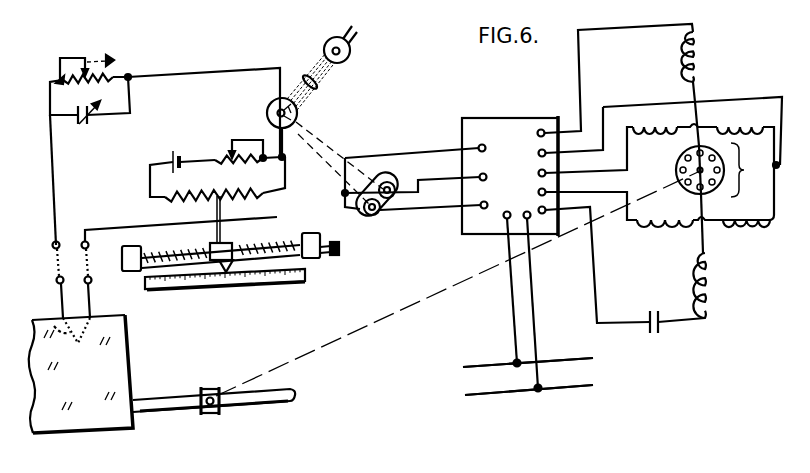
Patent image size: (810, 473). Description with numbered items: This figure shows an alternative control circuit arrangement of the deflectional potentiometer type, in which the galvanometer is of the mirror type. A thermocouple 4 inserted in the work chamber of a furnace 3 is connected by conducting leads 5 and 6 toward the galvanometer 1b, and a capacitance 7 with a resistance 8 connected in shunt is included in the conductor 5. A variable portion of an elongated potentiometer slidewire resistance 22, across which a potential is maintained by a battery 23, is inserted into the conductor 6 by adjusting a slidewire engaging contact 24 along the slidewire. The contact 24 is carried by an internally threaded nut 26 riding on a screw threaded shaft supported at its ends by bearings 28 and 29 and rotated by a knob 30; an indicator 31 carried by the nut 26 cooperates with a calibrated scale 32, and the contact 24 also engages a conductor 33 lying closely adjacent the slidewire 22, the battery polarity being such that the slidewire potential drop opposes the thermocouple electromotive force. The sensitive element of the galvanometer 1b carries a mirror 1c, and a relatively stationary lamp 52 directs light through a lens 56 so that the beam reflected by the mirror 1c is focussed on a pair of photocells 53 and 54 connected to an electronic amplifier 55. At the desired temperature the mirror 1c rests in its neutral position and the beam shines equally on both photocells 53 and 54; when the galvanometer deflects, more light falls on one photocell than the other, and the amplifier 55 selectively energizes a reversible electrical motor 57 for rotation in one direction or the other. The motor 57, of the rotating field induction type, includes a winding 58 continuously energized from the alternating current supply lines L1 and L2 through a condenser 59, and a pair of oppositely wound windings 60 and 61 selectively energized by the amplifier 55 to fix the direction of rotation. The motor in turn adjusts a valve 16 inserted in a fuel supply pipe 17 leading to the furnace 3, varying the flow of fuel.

The galvanometer 1b is at (298, 111).
The mirror 1c is at (278, 103).
The furnace 3 is at (122, 358).
The thermocouple 4 is at (62, 332).
The conducting lead 5 is at (56, 222).
The conducting lead 6 is at (112, 226).
The capacitance 7 is at (89, 125).
The resistance 8 is at (62, 80).
The valve 16 is at (210, 392).
The fuel supply pipe 17 is at (268, 410).
The potentiometer slidewire resistance 22 is at (255, 194).
The battery 23 is at (178, 151).
The slidewire engaging contact 24 is at (225, 148).
The internally threaded nut 26 is at (208, 246).
The bearing 28 is at (84, 274).
The bearing 29 is at (320, 258).
The knob 30 is at (339, 249).
The indicator 31 is at (226, 272).
The scale 32 is at (289, 281).
The conductor 33 is at (238, 221).
The lamp 52 is at (350, 52).
The photocell 53 is at (400, 178).
The photocell 54 is at (372, 217).
The electronic amplifier 55 is at (505, 117).
The lens 56 is at (318, 82).
The reversible electrical motor 57 is at (722, 170).
The winding 58 is at (704, 65).
The condenser 59 is at (659, 334).
The winding 60 is at (661, 130).
The winding 61 is at (647, 222).
The alternating current supply line L1 is at (551, 362).
The alternating current supply line L2 is at (576, 396).